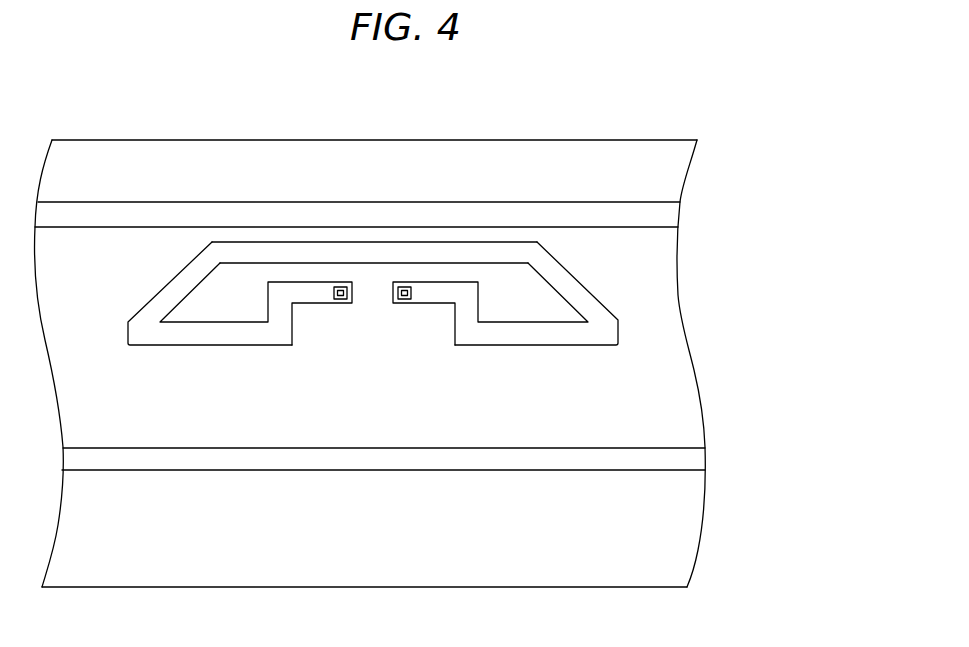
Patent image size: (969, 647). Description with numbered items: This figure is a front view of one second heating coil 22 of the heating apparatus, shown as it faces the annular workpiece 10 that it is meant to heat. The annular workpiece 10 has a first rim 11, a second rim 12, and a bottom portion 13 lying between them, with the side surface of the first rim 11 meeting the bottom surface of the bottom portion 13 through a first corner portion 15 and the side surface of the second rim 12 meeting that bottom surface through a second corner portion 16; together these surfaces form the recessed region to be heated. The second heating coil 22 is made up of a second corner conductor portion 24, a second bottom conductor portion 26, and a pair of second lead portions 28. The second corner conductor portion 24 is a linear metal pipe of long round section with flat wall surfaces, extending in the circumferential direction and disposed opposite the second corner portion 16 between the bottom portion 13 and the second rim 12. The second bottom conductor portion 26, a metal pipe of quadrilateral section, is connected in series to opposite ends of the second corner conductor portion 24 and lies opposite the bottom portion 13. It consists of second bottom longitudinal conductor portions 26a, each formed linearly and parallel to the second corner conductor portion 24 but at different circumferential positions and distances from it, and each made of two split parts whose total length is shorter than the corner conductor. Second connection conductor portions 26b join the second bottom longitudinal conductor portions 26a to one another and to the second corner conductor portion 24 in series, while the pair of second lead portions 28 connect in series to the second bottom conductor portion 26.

The annular workpiece 10 is at (583, 140).
The first rim 11 is at (515, 470).
The second rim 12 is at (487, 202).
The bottom portion 13 is at (673, 327).
The first corner portion 15 is at (640, 448).
The second corner portion 16 is at (642, 227).
The second heating coil 22 is at (372, 242).
The second corner conductor portion 24 is at (293, 242).
The second bottom conductor portion 26 is at (378, 332).
The second bottom longitudinal conductor portion 26a is at (213, 345).
The second connection conductor portion 26b is at (455, 325).
The second lead portion 28 is at (340, 303).